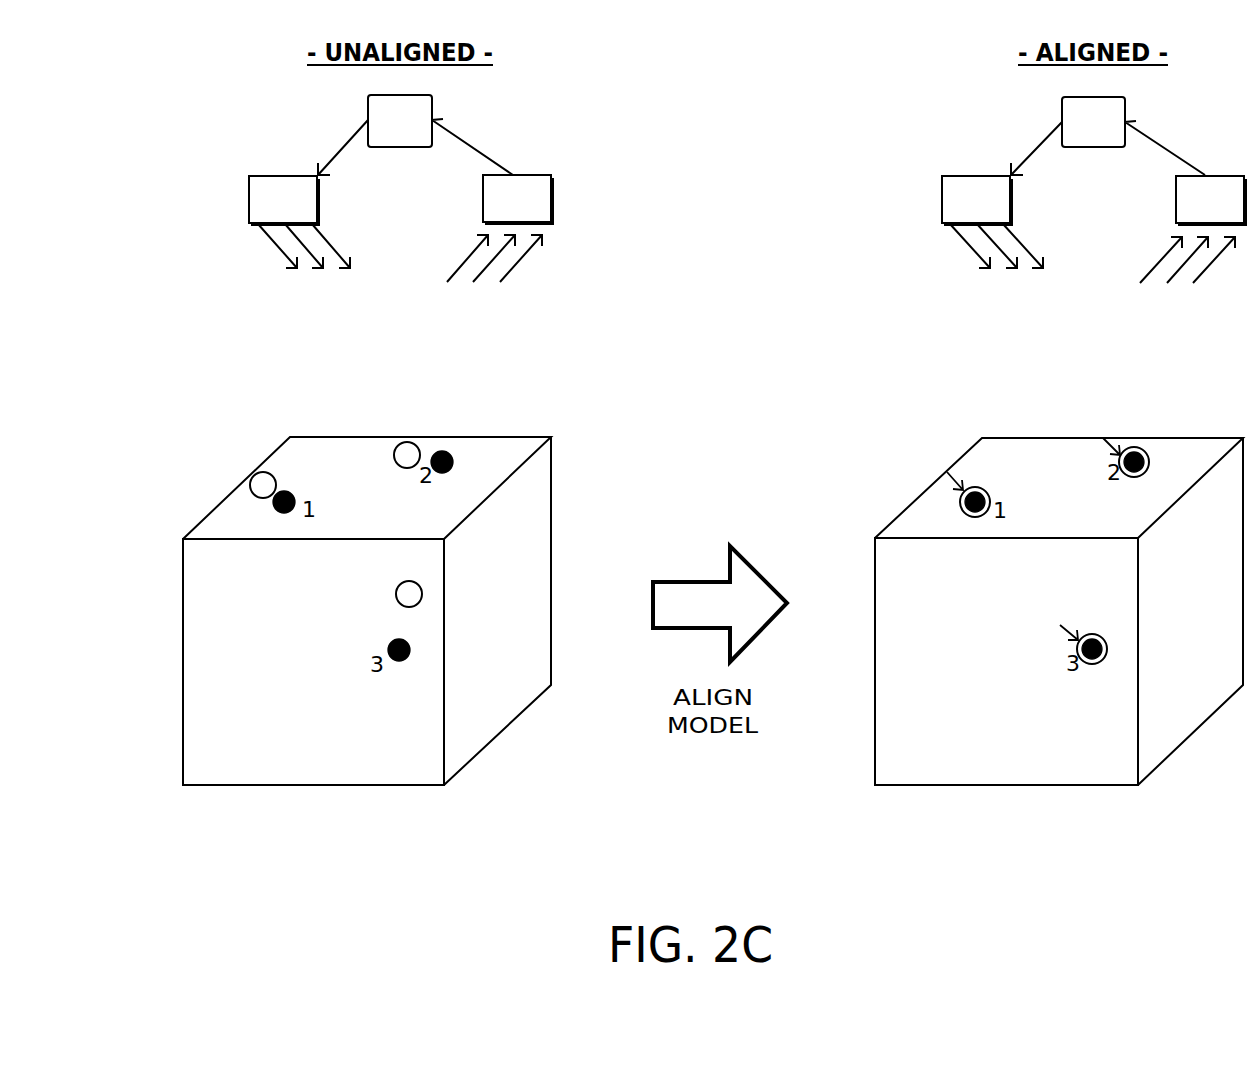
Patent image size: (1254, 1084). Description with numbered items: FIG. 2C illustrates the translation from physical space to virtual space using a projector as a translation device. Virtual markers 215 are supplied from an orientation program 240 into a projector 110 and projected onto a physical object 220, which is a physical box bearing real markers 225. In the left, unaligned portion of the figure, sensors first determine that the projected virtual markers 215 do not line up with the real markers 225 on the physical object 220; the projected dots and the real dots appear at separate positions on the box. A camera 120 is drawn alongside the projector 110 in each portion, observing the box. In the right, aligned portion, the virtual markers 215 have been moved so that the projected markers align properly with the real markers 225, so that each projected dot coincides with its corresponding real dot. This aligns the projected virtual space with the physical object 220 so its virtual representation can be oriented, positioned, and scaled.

The orientation program 240 is at (419, 132).
The projector 110 is at (301, 210).
The camera 120 is at (534, 210).
The physical object 220 is at (713, 676).
The virtual markers 215 is at (1133, 447).
The real markers 225 is at (287, 492).